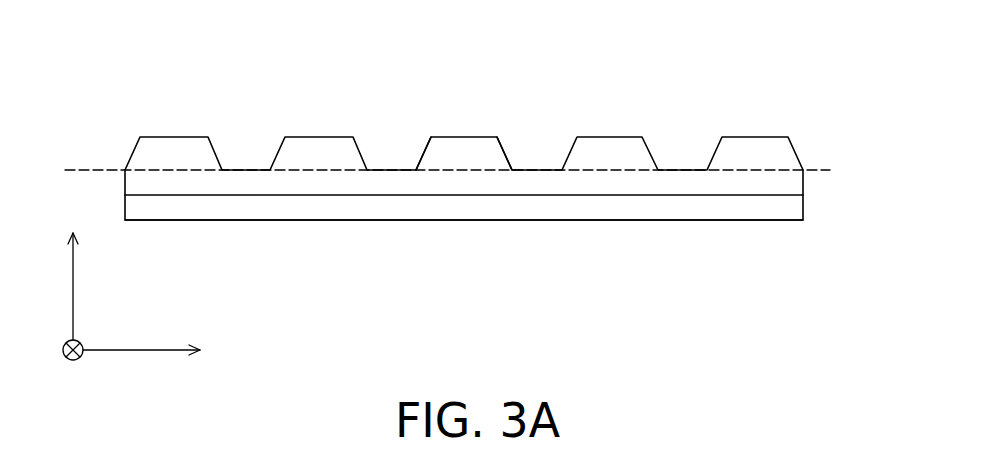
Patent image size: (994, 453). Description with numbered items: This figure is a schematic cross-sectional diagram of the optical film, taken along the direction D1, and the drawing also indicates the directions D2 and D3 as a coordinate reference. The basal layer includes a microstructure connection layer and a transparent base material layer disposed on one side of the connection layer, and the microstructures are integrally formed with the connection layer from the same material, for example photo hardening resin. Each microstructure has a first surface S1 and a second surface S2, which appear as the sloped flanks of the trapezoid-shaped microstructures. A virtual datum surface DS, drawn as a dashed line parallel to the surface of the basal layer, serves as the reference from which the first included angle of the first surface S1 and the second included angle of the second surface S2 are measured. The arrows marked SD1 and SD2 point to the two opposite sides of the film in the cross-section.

The datum surface DS is at (88, 170).
The first side SD1 is at (107, 127).
The second side SD2 is at (845, 103).
The first surface S1 is at (505, 150).
The second surface S2 is at (424, 152).
The direction D1 is at (165, 353).
The second direction D2 is at (76, 369).
The third direction D3 is at (71, 270).